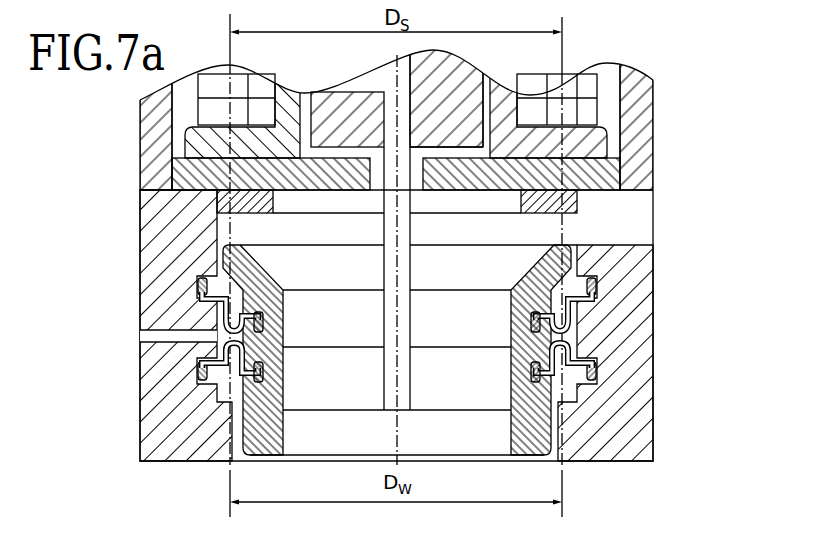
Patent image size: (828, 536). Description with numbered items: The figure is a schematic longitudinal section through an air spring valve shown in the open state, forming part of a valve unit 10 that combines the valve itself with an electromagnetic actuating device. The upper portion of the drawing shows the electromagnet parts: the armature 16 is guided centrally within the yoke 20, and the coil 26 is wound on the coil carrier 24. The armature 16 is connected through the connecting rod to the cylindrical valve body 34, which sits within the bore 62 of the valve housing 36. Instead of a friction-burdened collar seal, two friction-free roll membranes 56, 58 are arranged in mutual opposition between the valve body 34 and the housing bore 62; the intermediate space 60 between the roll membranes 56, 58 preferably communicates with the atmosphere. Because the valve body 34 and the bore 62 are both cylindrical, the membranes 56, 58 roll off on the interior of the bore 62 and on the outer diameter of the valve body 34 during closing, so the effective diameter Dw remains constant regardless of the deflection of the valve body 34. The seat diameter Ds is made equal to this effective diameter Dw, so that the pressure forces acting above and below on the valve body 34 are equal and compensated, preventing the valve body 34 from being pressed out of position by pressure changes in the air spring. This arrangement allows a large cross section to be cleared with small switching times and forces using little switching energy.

The valve unit 10 is at (131, 222).
The armature 16 is at (444, 76).
The yoke 20 is at (639, 137).
The coil carrier 24 is at (507, 90).
The coil 26 is at (582, 88).
The valve body 34 is at (544, 449).
The valve housing 36 is at (630, 352).
The roll membrane 56 is at (222, 305).
The roll membrane 58 is at (205, 380).
The intermediate space 60 is at (210, 349).
The valve housing bore 62 is at (568, 290).